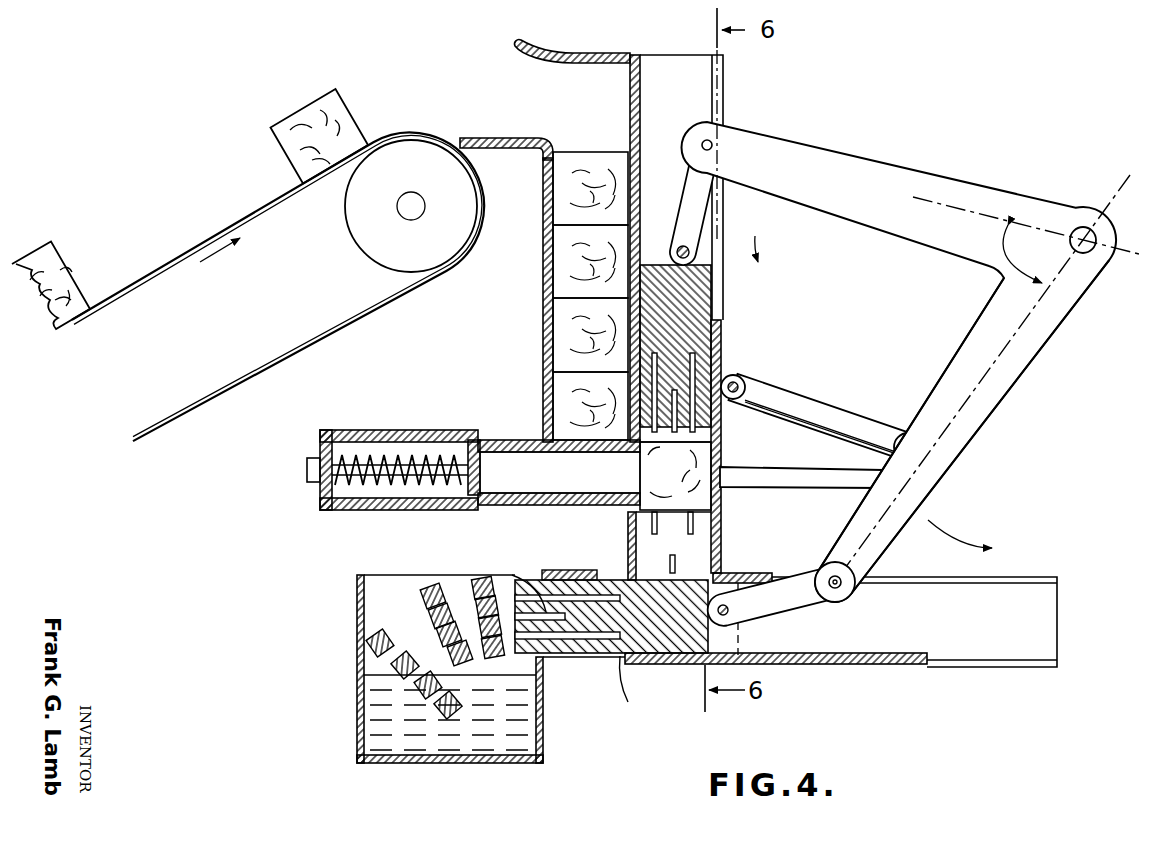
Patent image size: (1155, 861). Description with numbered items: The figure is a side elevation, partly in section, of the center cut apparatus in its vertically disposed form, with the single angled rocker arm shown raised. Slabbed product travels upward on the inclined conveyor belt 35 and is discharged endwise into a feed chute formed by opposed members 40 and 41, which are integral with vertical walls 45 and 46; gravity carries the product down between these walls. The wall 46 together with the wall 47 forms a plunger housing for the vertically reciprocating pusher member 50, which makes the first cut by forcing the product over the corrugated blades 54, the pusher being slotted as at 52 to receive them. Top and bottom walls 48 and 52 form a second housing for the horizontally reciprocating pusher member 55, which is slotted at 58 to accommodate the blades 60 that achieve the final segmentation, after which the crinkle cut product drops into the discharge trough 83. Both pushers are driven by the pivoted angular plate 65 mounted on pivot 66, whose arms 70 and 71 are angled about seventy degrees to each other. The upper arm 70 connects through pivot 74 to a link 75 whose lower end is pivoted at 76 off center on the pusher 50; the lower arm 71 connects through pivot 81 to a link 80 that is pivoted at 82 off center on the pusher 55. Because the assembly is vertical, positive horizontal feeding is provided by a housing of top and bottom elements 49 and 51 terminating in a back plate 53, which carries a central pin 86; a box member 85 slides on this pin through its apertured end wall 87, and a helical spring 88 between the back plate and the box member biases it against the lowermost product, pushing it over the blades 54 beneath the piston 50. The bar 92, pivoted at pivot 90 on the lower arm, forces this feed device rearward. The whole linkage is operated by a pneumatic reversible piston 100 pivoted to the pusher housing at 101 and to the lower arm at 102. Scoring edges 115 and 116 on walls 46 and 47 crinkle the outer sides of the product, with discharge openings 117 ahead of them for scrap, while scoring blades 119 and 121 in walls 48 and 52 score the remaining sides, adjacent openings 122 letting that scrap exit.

The inclined conveyor belt 35 is at (165, 258).
The feed chute member 40 is at (535, 50).
The feed chute member 41 is at (480, 139).
The vertical wall 45 is at (546, 200).
The vertical wall 46 is at (641, 90).
The wall 47 is at (716, 353).
The top wall 48 is at (736, 580).
The top element of feed housing 49 is at (404, 430).
The vertically reciprocating pusher member 50 is at (697, 308).
The bottom element of feed housing 51 is at (401, 510).
The bottom wall 52 is at (699, 375).
The back plate 53 is at (321, 498).
The corrugated blades 54 is at (650, 528).
The horizontally reciprocating pusher member 55 is at (666, 649).
The slots 58 is at (578, 642).
The blades 60 is at (519, 583).
The pivoted angular plate 65 is at (1013, 190).
The pivot 66 is at (1092, 233).
The upper arm 70 is at (866, 166).
The lower arm 71 is at (1022, 366).
The pivot 74 is at (712, 143).
The link 75 is at (694, 185).
The pivot 76 is at (690, 253).
The link 80 is at (792, 601).
The pivot 81 is at (848, 578).
The pivot 82 is at (728, 614).
The discharge trough 83 is at (546, 737).
The box member 85 is at (527, 497).
The pin 86 is at (306, 471).
The end wall 87 is at (480, 464).
The helical spring 88 is at (356, 457).
The pivot 90 is at (894, 485).
The bar 92 is at (819, 485).
The pneumatic reversible piston 100 is at (821, 410).
The pivot 101 is at (733, 400).
The pivot 102 is at (920, 441).
The cutting edge 115 is at (713, 513).
The cutting edge 116 is at (630, 518).
The discharge openings 117 is at (740, 503).
The scoring blade 119 is at (586, 592).
The scoring blade 121 is at (601, 640).
The openings 122 is at (626, 574).